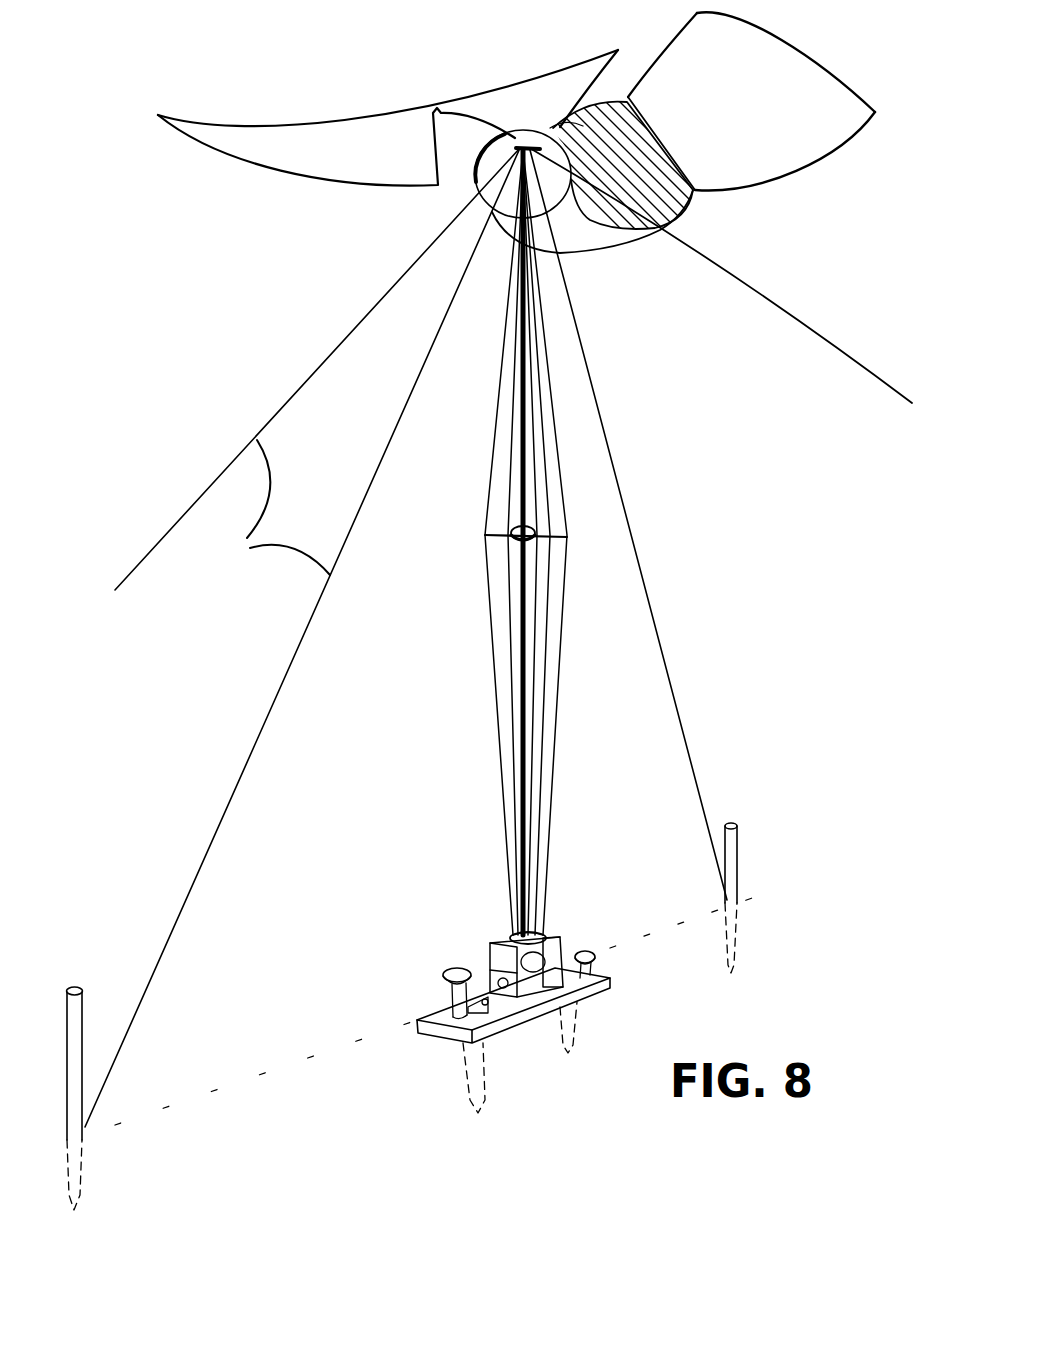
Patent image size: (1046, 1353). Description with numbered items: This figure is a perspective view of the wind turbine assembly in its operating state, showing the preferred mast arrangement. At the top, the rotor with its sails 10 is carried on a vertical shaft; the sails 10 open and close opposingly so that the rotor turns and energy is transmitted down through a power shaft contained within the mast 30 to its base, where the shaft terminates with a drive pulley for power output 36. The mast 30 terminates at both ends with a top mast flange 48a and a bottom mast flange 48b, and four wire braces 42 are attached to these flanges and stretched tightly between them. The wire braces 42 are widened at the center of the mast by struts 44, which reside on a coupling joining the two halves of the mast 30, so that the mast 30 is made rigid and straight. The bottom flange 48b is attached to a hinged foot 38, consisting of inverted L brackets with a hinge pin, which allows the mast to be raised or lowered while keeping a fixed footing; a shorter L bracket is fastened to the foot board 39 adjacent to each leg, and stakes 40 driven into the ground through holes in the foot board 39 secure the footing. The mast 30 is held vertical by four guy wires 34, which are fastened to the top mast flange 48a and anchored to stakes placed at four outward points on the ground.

The sails 10 is at (348, 145).
The mast 30 is at (528, 723).
The guy wires 34 is at (267, 507).
The drive pulley for power output 36 is at (506, 1074).
The hinged foot 38 is at (550, 940).
The foot board 39 is at (442, 1016).
The stakes 40 is at (583, 955).
The wire braces 42 is at (492, 462).
The struts 44 is at (490, 538).
The top mast flange 48a is at (520, 146).
The bottom mast flange 48b is at (510, 935).